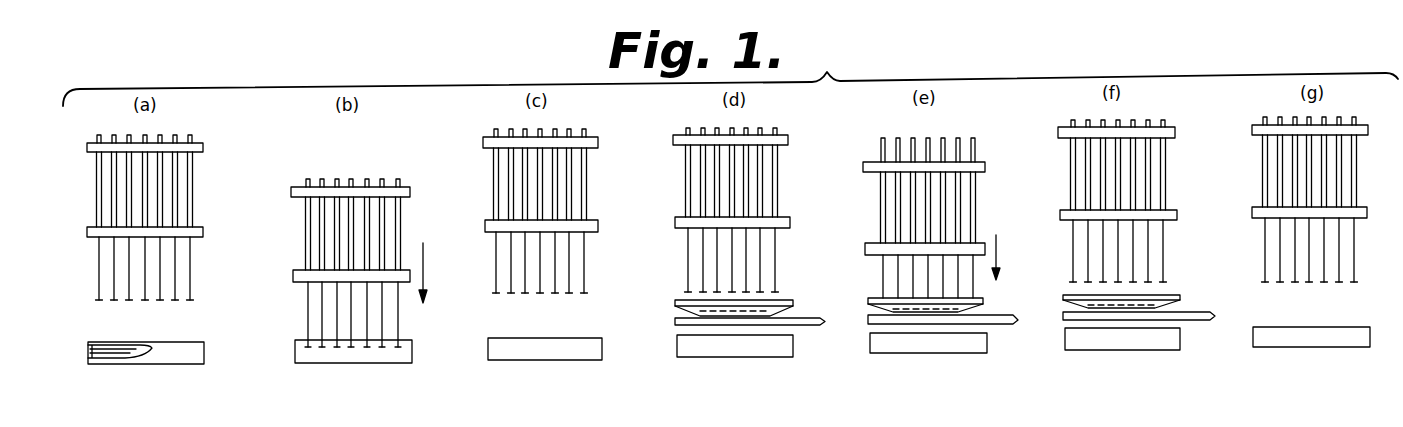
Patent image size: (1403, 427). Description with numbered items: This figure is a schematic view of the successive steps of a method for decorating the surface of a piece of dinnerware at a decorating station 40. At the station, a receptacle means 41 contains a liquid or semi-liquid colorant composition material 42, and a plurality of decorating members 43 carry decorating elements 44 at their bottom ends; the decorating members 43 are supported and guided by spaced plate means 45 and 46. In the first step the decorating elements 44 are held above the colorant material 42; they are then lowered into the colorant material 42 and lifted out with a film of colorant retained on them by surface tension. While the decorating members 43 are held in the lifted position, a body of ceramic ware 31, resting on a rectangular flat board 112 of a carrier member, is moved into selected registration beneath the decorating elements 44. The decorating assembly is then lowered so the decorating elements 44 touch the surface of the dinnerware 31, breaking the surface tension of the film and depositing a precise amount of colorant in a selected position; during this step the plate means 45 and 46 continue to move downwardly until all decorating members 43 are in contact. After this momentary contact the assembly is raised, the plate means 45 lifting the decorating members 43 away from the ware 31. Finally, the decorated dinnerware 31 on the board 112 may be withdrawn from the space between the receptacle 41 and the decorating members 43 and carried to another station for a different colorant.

The decorating station 40 is at (838, 69).
The receptacle means 41 is at (185, 362).
The colorant composition material 42 is at (117, 352).
The decorating members 43 is at (190, 278).
The decorating elements 44 is at (175, 300).
The plate means 45 is at (203, 232).
The plate means 46 is at (203, 147).
The ceramic ware 31 is at (790, 302).
The flat board 112 is at (887, 323).